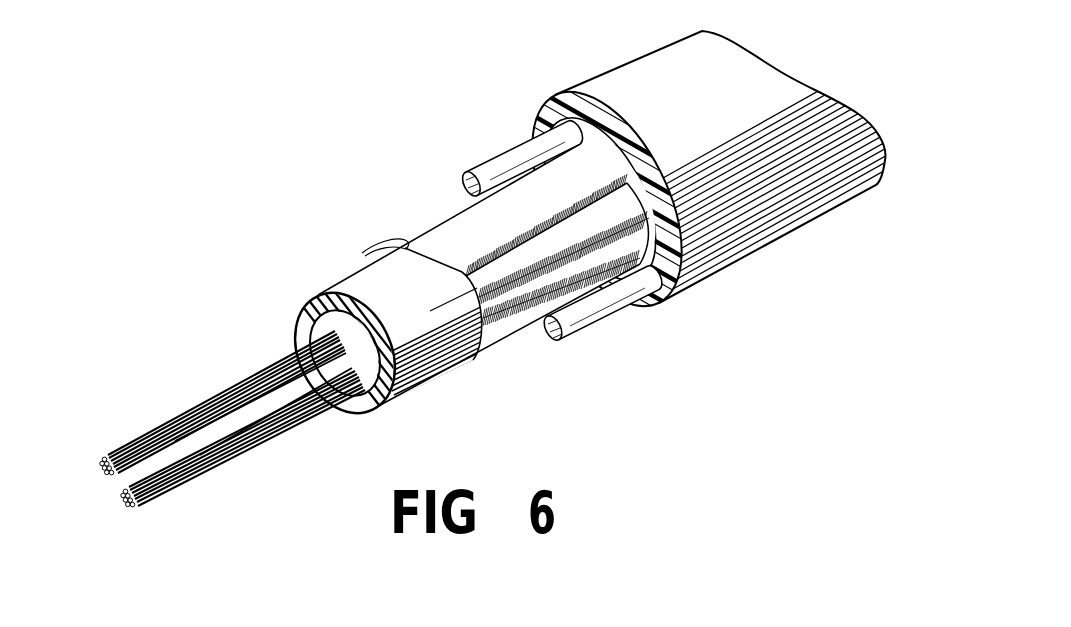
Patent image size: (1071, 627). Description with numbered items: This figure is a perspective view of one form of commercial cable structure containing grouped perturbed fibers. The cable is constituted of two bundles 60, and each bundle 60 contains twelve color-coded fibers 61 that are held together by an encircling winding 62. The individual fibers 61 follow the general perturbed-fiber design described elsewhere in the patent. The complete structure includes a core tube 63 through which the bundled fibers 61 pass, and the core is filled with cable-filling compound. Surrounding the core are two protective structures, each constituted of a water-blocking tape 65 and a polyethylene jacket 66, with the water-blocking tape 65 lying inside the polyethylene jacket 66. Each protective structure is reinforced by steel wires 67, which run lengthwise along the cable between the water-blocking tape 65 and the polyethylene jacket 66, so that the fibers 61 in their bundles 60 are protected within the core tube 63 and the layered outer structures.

The bundle 60 is at (117, 491).
The color-coded fiber 61 is at (127, 507).
The encircling winding 62 is at (173, 453).
The core tube 63 is at (323, 314).
The water-blocking tape 65 is at (447, 218).
The polyethylene jacket 66 is at (540, 110).
The steel wire 67 is at (482, 165).